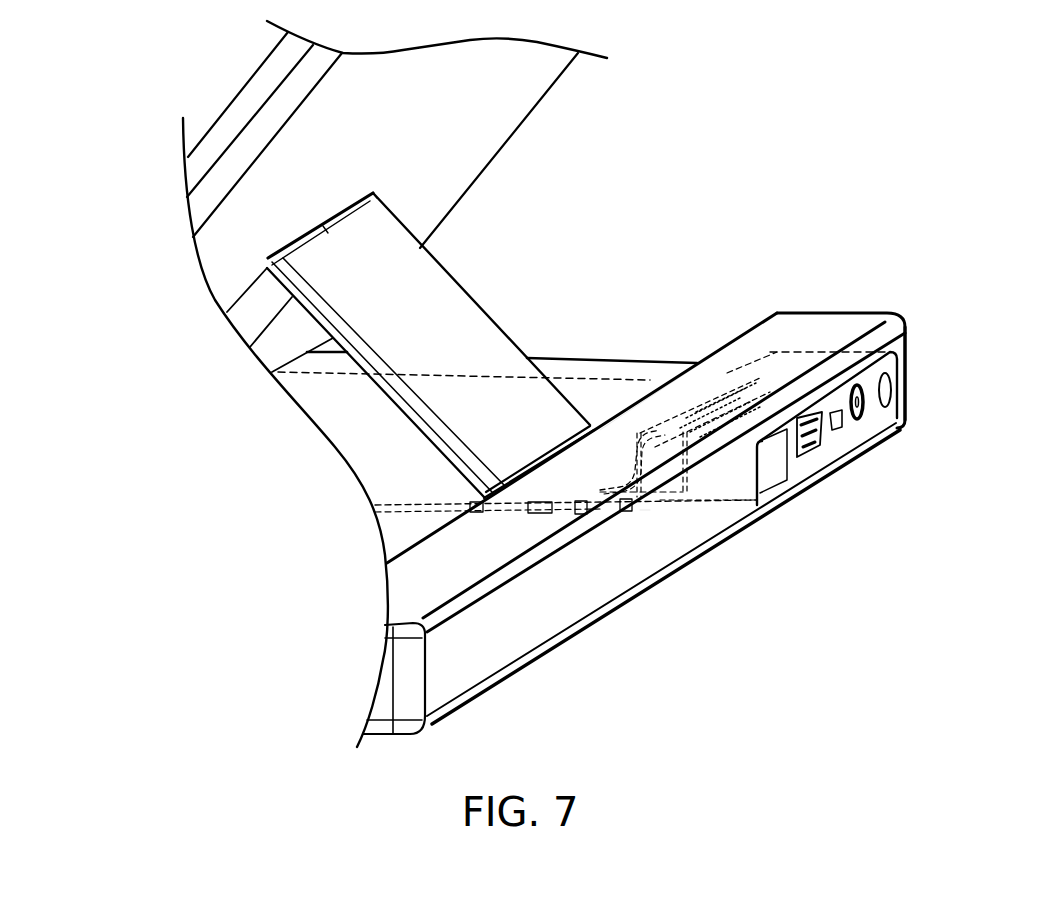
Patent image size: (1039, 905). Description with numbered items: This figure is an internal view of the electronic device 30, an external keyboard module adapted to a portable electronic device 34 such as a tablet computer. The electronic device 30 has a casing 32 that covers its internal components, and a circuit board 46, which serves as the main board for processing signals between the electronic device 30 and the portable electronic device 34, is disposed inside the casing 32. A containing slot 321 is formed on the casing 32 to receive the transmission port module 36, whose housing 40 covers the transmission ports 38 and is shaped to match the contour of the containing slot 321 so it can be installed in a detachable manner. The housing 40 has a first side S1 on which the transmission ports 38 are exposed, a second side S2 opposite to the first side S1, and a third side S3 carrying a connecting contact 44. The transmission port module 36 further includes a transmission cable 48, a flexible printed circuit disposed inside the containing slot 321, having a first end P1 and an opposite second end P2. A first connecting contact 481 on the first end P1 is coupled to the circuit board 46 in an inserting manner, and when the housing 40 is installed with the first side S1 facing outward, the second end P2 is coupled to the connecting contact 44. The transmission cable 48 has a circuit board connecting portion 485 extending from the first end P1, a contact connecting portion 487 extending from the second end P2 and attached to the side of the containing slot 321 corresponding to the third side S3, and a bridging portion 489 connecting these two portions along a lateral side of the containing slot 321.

The electronic device 30 is at (888, 131).
The casing 32 is at (795, 313).
The containing slot 321 is at (907, 350).
The portable electronic device 34 is at (523, 110).
The transmission port module 36 is at (927, 379).
The transmission ports 38 is at (808, 460).
The housing 40 is at (877, 353).
The connecting contact 44 is at (727, 400).
The circuit board 46 is at (567, 380).
The transmission cable 48 is at (678, 517).
The first connecting contact 481 is at (613, 513).
The circuit board connecting portion 485 is at (660, 513).
The contact connecting portion 487 is at (670, 427).
The bridging portion 489 is at (683, 480).
The first end P1 is at (640, 510).
The second end P2 is at (707, 407).
The first side S1 is at (912, 392).
The second side S2 is at (750, 340).
The third side S3 is at (812, 352).